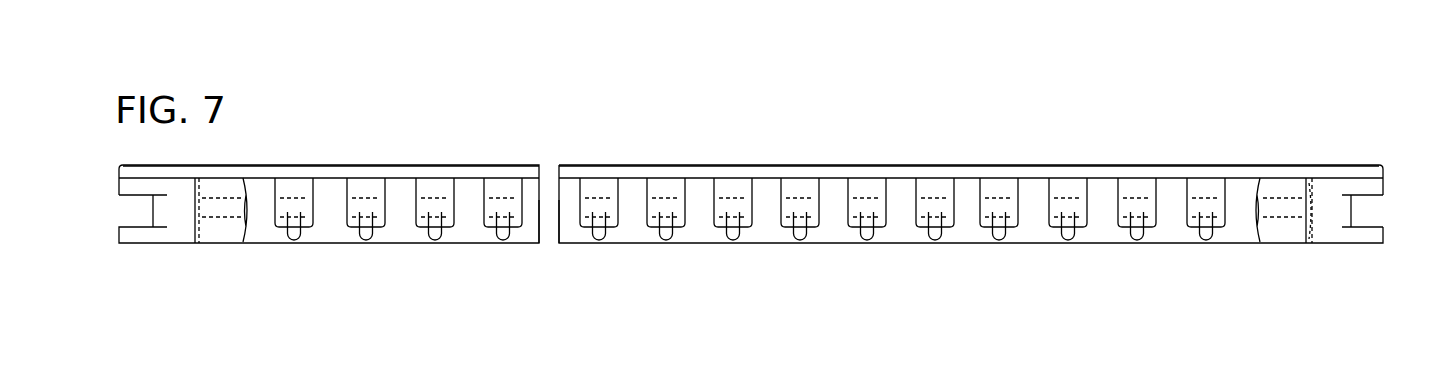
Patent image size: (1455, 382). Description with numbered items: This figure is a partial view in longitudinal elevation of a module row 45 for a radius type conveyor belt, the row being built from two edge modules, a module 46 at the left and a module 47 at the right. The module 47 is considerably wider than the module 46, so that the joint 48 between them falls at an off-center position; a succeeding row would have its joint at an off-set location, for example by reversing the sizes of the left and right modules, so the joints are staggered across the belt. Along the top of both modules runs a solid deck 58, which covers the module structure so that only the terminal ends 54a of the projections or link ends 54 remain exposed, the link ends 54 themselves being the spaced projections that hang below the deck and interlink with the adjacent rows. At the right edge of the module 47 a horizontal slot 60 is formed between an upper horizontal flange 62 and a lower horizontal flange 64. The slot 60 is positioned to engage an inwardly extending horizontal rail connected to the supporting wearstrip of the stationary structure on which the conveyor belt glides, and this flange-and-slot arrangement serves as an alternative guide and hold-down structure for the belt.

The module row 45 is at (1212, 147).
The module 46 is at (445, 145).
The module 47 is at (1300, 155).
The joint 48 is at (548, 168).
The link ends 54 is at (802, 242).
The terminal ends 54a is at (1212, 242).
The solid deck 58 is at (328, 166).
The horizontal slot 60 is at (1368, 212).
The upper horizontal flange 62 is at (1378, 188).
The lower horizontal flange 64 is at (1378, 233).